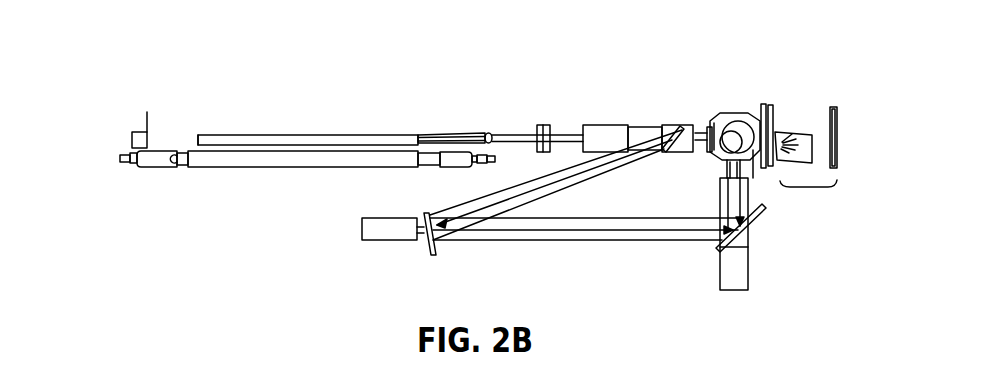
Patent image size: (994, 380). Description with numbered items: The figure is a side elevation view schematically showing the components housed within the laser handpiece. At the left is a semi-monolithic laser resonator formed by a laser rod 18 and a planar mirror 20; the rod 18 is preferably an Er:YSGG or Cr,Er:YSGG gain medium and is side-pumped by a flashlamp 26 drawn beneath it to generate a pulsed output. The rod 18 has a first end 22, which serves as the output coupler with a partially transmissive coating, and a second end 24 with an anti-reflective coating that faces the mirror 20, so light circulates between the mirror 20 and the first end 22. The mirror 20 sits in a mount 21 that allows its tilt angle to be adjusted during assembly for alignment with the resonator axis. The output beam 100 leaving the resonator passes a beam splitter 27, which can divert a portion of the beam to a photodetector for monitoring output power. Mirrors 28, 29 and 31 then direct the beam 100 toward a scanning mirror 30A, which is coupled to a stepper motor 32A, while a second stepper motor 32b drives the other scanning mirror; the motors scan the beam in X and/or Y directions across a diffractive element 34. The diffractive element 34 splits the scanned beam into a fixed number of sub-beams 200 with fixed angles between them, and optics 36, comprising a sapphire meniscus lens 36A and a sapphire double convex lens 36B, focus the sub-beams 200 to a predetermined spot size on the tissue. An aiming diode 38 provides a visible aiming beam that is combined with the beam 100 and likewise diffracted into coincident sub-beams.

The mount 21 is at (132, 138).
The planar mirror 20 is at (147, 112).
The second end 24 is at (198, 138).
The laser rod 18 is at (257, 135).
The flashlamp 26 is at (223, 167).
The first end 22 is at (420, 135).
The output beam 100 is at (457, 134).
The beam splitter 27 is at (545, 125).
The stepper motor 32A is at (608, 125).
The mirror 28 is at (688, 126).
The scanning mirror 30A is at (722, 113).
The diffractive element 34 is at (762, 104).
The meniscus lens 36A is at (771, 105).
The double convex lens 36B is at (836, 107).
The sub-beams 200 is at (792, 121).
The optics 36 is at (808, 196).
The mirror 31 is at (752, 227).
The stepper motor 32b is at (750, 272).
The aiming diode 38 is at (382, 240).
The mirror 29 is at (435, 257).